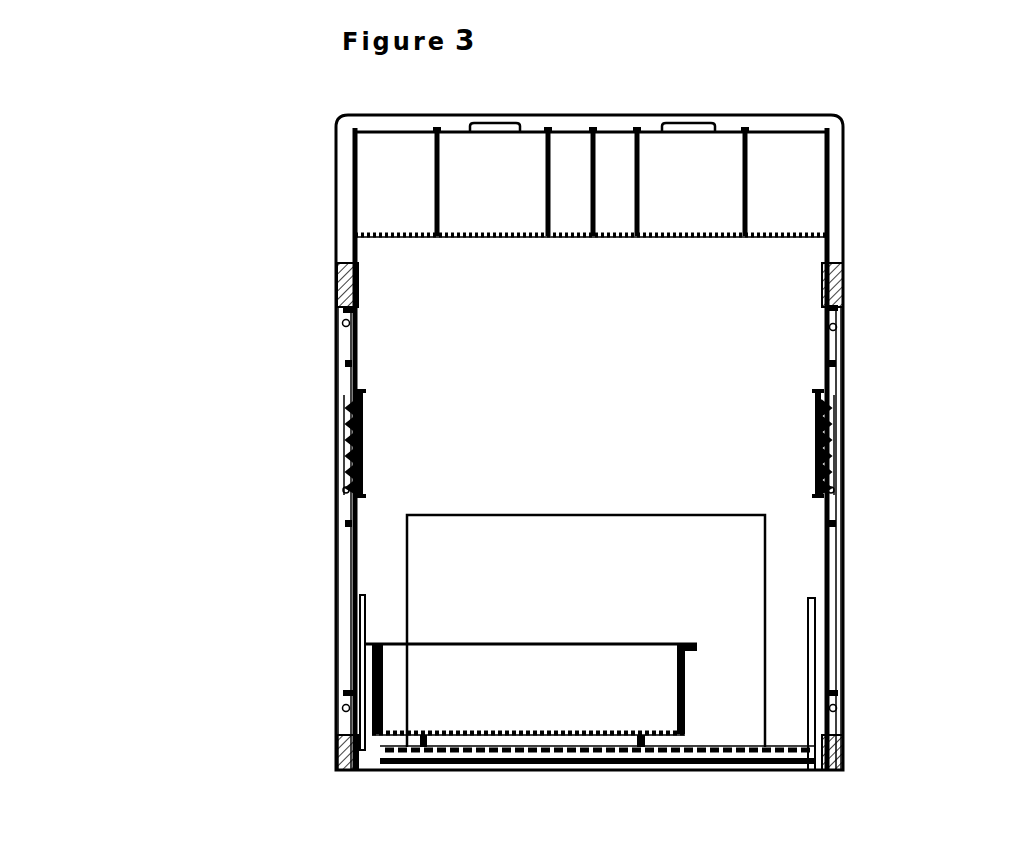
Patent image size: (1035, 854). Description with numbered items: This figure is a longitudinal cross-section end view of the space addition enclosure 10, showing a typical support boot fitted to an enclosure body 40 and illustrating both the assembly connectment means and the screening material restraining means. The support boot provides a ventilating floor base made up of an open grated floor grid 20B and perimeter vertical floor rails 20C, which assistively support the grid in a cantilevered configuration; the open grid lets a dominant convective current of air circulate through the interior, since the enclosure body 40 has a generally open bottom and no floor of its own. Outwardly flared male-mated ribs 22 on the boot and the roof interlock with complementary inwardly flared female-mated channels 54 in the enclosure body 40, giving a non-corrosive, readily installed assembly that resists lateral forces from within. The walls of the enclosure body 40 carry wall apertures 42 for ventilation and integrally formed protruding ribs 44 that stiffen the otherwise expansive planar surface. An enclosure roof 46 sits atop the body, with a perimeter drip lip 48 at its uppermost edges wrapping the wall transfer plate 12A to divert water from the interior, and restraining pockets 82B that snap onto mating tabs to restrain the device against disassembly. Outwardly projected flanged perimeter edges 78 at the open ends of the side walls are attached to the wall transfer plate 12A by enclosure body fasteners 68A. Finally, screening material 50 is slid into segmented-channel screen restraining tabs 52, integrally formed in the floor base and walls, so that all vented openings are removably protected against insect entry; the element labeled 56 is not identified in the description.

The space addition enclosure 10 is at (287, 143).
The wall transfer plate 12A is at (580, 349).
The floor grid 20B is at (487, 747).
The floor rails 20C is at (360, 603).
The ribs 22 is at (838, 297).
The enclosure body 40 is at (822, 543).
The wall apertures 42 is at (340, 465).
The protruding ribs 44 is at (826, 600).
The enclosure roof 46 is at (793, 170).
The perimeter drip lip 48 is at (810, 130).
The screening material 50 is at (340, 420).
The screen restraining tabs 52 is at (340, 382).
The channels 54 is at (840, 270).
The tray 56 is at (438, 693).
The enclosure body fasteners 68A is at (838, 327).
The flanged perimeter edges 78 is at (832, 357).
The restraining pockets 82B is at (680, 130).